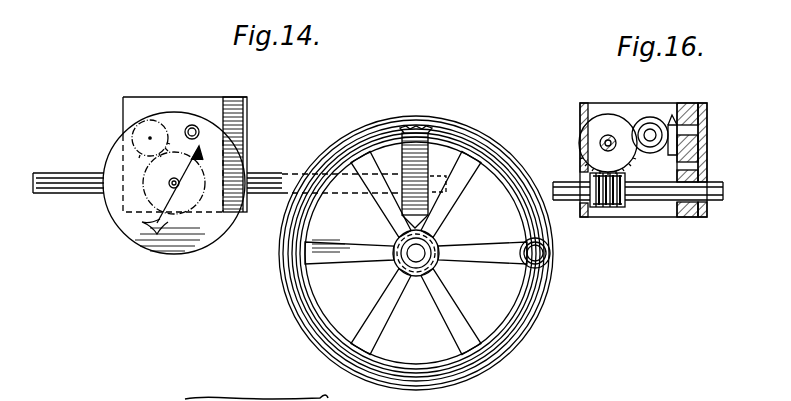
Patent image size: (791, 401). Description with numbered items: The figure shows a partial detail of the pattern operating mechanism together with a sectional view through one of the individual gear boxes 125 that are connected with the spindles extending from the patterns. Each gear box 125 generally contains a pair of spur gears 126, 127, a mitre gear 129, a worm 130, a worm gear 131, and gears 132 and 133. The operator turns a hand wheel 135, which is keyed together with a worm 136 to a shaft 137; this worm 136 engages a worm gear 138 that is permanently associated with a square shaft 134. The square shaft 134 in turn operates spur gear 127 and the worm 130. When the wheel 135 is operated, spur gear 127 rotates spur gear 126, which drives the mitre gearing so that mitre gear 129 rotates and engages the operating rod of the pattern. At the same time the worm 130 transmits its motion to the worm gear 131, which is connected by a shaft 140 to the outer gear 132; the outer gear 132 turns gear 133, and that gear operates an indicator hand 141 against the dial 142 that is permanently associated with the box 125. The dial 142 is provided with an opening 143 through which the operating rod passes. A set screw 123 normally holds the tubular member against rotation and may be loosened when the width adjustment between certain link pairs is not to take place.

In FIG. 16, the set screw 123 is at (670, 117).
In FIG. 14, the gear box 125 is at (130, 98).
In FIG. 14, the spur gear 126 is at (248, 112).
In FIG. 16, the spur gear 126 is at (706, 122).
In FIG. 14, the spur gear 127 is at (246, 153).
In FIG. 16, the spur gear 127 is at (700, 176).
In FIG. 16, the mitre gear 129 is at (648, 118).
In FIG. 16, the worm 130 is at (615, 208).
In FIG. 16, the worm gear 131 is at (578, 143).
In FIG. 14, the outer gear 132 is at (122, 126).
In FIG. 14, the gear 133 is at (143, 192).
In FIG. 14, the square shaft 134 is at (60, 170).
In FIG. 16, the square shaft 134 is at (567, 200).
In FIG. 14, the hand wheel 135 is at (508, 343).
In FIG. 14, the worm 136 is at (400, 259).
In FIG. 14, the shaft 137 is at (432, 257).
In FIG. 14, the worm gear 138 is at (433, 141).
In FIG. 16, the shaft 140 is at (604, 141).
In FIG. 14, the indicator hand 141 is at (172, 208).
In FIG. 14, the dial 142 is at (128, 226).
In FIG. 14, the opening 143 is at (195, 128).